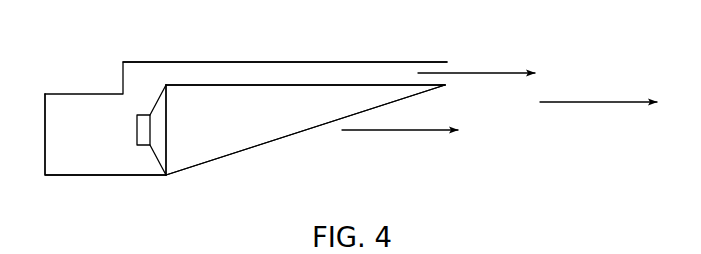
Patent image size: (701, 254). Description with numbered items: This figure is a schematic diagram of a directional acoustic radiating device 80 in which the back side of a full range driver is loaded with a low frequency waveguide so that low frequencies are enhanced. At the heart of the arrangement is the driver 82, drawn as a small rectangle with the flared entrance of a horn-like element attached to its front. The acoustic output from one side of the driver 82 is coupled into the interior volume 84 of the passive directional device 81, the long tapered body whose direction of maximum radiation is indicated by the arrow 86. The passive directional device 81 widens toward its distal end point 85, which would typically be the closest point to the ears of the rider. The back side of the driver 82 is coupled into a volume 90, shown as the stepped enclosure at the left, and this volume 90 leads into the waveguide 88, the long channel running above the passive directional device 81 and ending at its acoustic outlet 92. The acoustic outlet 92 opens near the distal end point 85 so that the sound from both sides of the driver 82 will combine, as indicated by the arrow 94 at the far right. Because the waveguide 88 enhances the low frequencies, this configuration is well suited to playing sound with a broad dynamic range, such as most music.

The directional acoustic radiating device 80 is at (72, 183).
The passive directional device 81 is at (281, 148).
The driver 82 is at (160, 148).
The interior volume 84 is at (210, 153).
The distal end point 85 is at (445, 87).
The arrow 86 is at (430, 130).
The waveguide 88 is at (292, 73).
The volume 90 is at (78, 110).
The acoustic outlet 92 is at (492, 73).
The arrow 94 is at (600, 102).